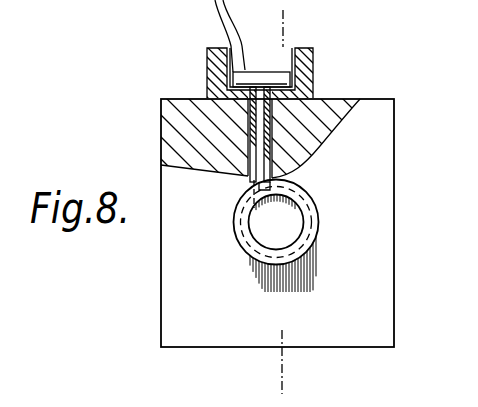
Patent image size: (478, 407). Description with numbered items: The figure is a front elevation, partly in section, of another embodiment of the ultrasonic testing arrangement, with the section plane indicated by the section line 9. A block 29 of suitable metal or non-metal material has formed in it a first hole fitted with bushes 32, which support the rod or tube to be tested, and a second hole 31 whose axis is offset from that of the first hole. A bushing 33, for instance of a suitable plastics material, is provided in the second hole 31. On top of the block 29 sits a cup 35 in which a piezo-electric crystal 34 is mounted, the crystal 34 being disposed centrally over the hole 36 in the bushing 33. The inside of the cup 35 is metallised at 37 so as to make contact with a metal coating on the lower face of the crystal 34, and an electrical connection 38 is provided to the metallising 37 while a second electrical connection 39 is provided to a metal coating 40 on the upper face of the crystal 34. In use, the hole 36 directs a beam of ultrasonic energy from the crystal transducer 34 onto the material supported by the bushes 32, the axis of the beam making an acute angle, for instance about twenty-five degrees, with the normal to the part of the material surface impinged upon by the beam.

The section line 9- 9 is at (284, 22).
The block 29 is at (378, 192).
The second hole 31 is at (212, 103).
The bushes 32 is at (315, 220).
The bushing 33 is at (308, 99).
The piezo-electric crystal 34 is at (277, 80).
The cup 35 is at (209, 66).
The hole 36 is at (260, 153).
The metallising 37 is at (298, 65).
The electrical connection 38 is at (218, 25).
The electrical connection 39 is at (229, 22).
The metal coating 40 is at (262, 80).